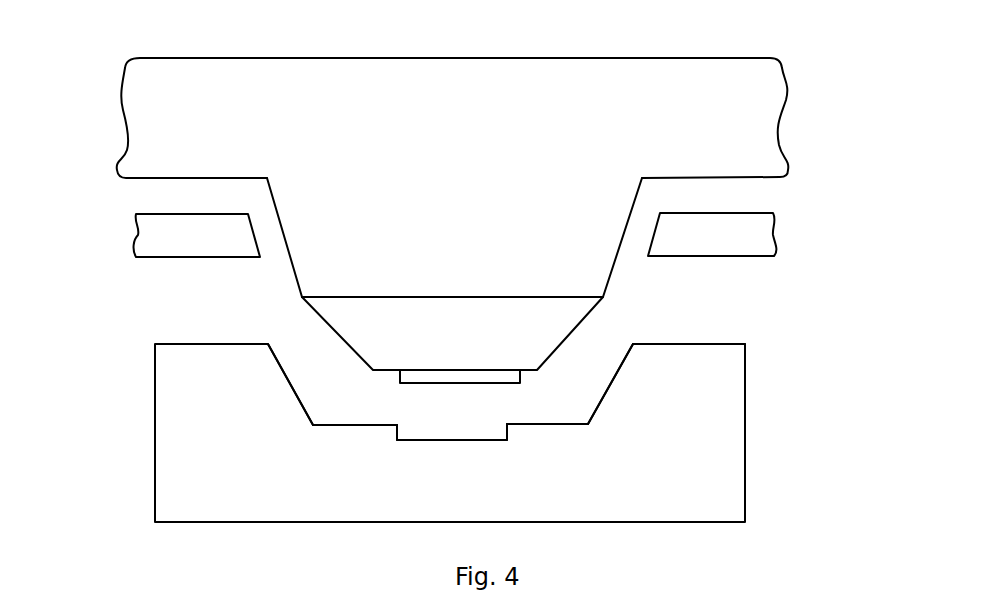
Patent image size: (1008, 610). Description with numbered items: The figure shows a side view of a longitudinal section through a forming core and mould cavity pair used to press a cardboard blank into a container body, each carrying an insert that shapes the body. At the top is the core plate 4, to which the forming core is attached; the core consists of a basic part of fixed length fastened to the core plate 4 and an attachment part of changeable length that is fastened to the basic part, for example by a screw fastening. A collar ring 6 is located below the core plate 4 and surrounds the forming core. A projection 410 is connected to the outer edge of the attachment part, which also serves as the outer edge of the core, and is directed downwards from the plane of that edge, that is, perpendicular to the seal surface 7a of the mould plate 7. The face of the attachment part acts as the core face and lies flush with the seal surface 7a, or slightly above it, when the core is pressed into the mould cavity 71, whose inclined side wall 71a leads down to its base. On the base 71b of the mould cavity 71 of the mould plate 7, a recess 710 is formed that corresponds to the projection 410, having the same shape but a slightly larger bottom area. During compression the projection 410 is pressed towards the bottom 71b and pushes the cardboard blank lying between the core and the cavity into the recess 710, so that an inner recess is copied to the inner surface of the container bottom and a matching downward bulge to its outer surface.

The core plate 4 is at (148, 116).
The projection 410 is at (487, 373).
The collar ring 6 is at (158, 247).
The mould plate 7 is at (728, 390).
The seal surface 7a is at (712, 344).
The mould cavity 71 is at (600, 406).
The recess left inclined wall 71a is at (290, 387).
The base of the mould cavity 71b is at (477, 441).
The recess 710 is at (427, 440).